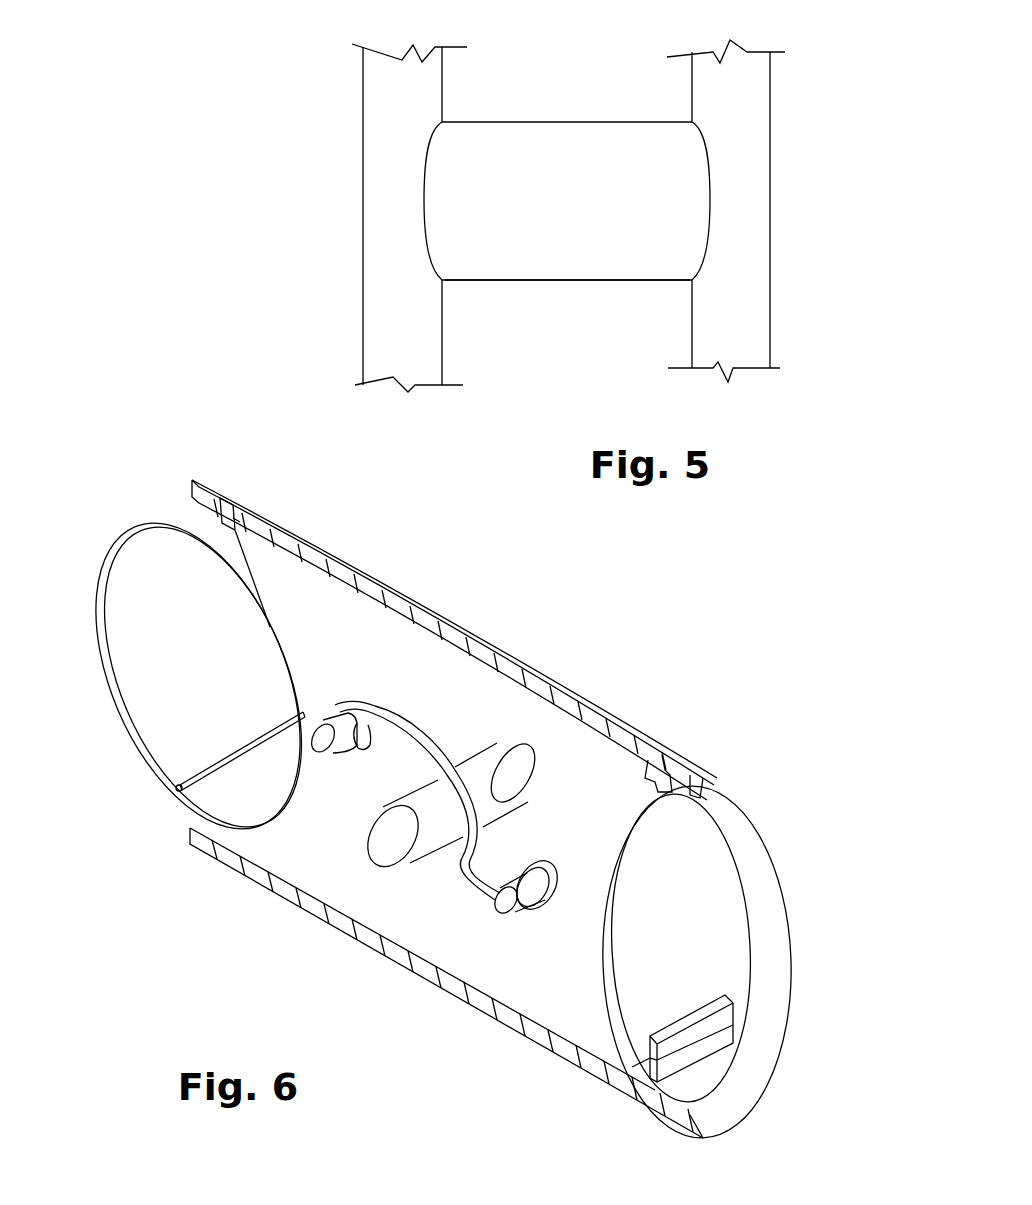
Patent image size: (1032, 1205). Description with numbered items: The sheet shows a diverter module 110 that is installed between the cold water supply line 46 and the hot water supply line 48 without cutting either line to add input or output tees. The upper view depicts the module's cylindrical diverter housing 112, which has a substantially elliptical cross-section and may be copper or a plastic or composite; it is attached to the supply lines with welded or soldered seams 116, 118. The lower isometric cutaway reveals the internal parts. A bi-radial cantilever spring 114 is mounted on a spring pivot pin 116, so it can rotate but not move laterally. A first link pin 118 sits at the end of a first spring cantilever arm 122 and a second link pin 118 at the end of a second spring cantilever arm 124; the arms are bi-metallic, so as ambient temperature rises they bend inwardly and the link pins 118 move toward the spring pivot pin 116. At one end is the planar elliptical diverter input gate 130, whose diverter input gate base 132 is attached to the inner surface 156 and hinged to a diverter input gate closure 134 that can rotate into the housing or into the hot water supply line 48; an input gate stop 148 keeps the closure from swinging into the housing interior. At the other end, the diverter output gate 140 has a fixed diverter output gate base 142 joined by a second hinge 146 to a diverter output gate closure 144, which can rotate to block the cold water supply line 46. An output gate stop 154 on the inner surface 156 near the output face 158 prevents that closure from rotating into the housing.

In FIG. 5, the cold water supply line 46 is at (690, 328).
In FIG. 5, the hot water supply line 48 is at (443, 348).
In FIG. 5, the diverter module 110 is at (599, 118).
In FIG. 6, the diverter module 110 is at (499, 598).
In FIG. 5, the diverter housing 112 is at (517, 263).
In FIG. 6, the diverter housing 112 is at (192, 481).
In FIG. 6, the bi-radial cantilever spring 114 is at (345, 710).
In FIG. 5, the spring pivot pin 116 is at (708, 178).
In FIG. 6, the spring pivot pin 116 is at (393, 862).
In FIG. 5, the link pin 118 is at (428, 167).
In FIG. 6, the link pin 118 is at (337, 753).
In FIG. 6, the first spring cantilever arm 122 is at (412, 733).
In FIG. 6, the second spring cantilever arm 124 is at (478, 885).
In FIG. 6, the diverter input gate 130 is at (112, 680).
In FIG. 6, the diverter input gate base 132 is at (217, 787).
In FIG. 6, the diverter input gate closure 134 is at (123, 576).
In FIG. 6, the diverter output gate 140 is at (612, 1040).
In FIG. 6, the diverter output gate base 142 is at (702, 1078).
In FIG. 6, the diverter output gate closure 144 is at (706, 832).
In FIG. 6, the second hinge 146 is at (730, 1000).
In FIG. 6, the input gate stop 148 is at (220, 514).
In FIG. 6, the output gate stop 154 is at (647, 752).
In FIG. 6, the inner surface 156 is at (752, 856).
In FIG. 6, the output face 158 is at (728, 1130).